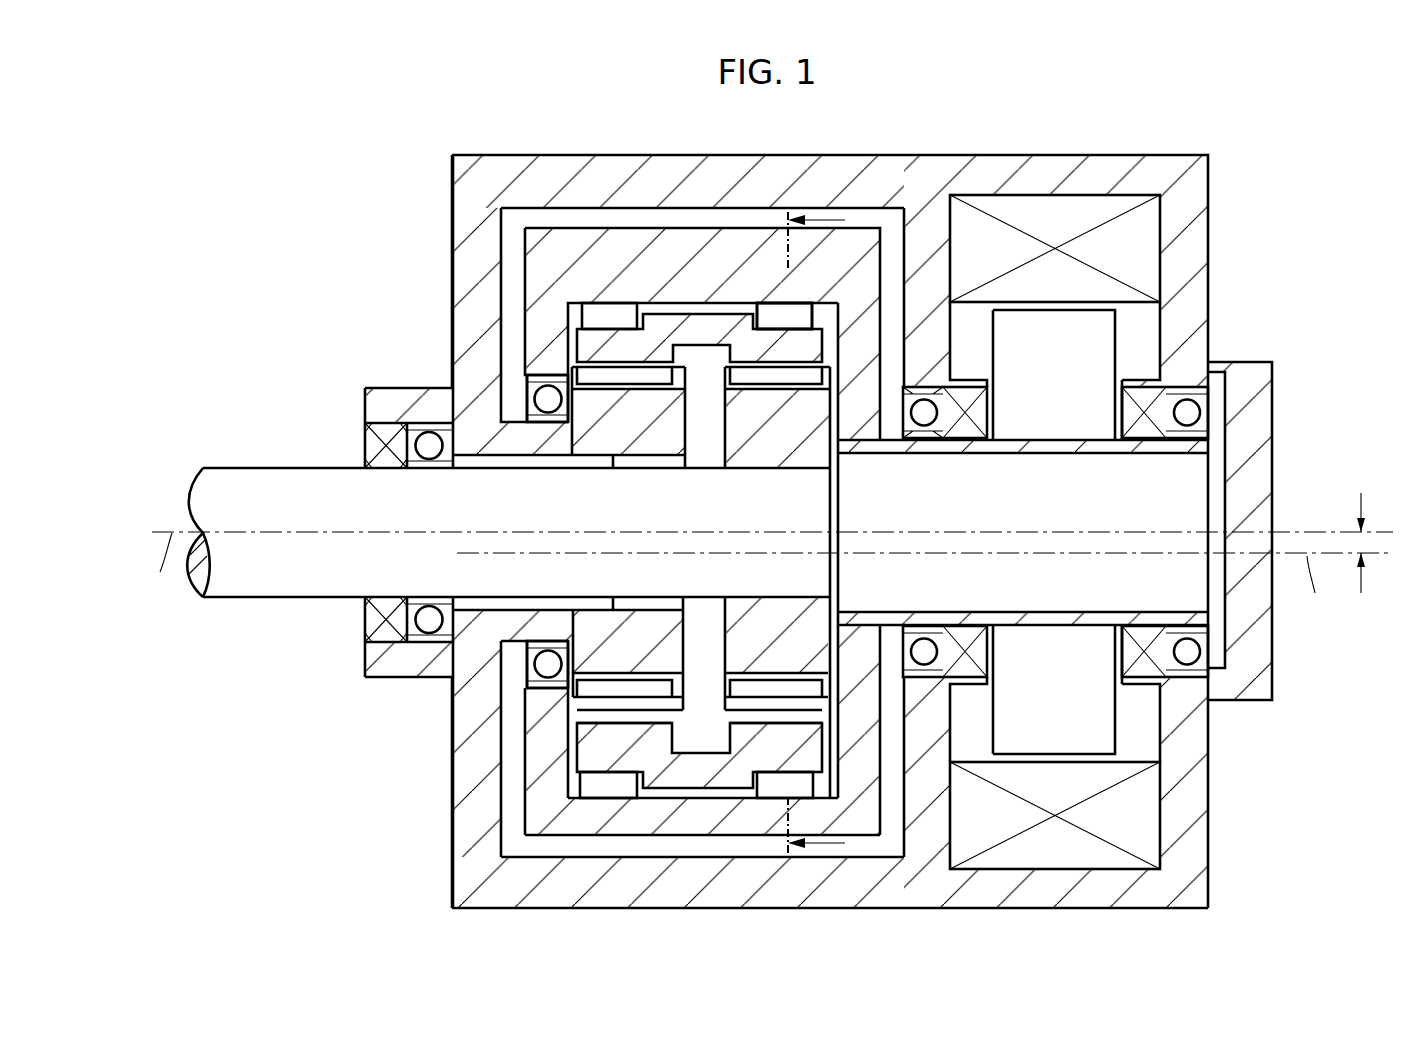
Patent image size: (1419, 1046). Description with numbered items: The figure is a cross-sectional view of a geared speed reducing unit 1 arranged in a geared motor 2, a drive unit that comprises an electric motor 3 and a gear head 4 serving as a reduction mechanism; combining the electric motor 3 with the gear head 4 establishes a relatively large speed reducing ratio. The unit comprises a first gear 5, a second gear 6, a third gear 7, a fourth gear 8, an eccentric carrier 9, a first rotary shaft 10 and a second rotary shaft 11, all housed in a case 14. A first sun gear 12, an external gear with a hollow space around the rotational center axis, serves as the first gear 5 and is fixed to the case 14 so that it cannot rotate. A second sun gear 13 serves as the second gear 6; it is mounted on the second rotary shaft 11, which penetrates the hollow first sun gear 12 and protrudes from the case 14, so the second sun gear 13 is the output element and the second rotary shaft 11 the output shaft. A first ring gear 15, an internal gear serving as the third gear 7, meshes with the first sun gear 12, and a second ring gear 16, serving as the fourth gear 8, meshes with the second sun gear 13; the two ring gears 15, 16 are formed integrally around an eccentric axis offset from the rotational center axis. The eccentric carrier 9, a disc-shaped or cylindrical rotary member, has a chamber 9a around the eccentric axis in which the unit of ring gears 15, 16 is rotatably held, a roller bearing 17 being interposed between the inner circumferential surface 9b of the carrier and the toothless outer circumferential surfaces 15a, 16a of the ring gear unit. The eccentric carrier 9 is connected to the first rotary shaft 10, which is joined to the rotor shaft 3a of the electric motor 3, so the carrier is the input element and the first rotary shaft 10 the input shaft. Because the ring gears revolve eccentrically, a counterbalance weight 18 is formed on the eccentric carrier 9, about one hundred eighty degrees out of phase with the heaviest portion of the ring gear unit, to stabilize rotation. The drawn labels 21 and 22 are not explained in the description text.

The geared speed reducing unit 1 is at (338, 213).
The geared motor 2 is at (1071, 119).
The electric motor 3 is at (1127, 735).
The rotor shaft 3a is at (1023, 617).
The gear head 4 is at (523, 770).
The first gear 5 is at (593, 438).
The first sun gear 12 is at (370, 512).
The second gear 6 is at (738, 410).
The second sun gear 13 is at (700, 598).
The third gear 7 is at (597, 340).
The first ring gear 15 is at (703, 286).
The fourth gear 8 is at (815, 347).
The second ring gear 16 is at (747, 286).
The eccentric carrier 9 is at (716, 254).
The chamber 9a is at (829, 753).
The inner circumferential surface 9b is at (672, 800).
The first rotary shaft 10 is at (862, 447).
The second rotary shaft 11 is at (270, 578).
The case 14 is at (856, 880).
The outer circumferential surface 15a is at (600, 793).
The outer circumferential surface 16a is at (780, 790).
The roller bearing 17 is at (610, 800).
The counterbalance weight 18 is at (540, 250).
The magnet 21 is at (784, 332).
The magnet 22 is at (613, 334).